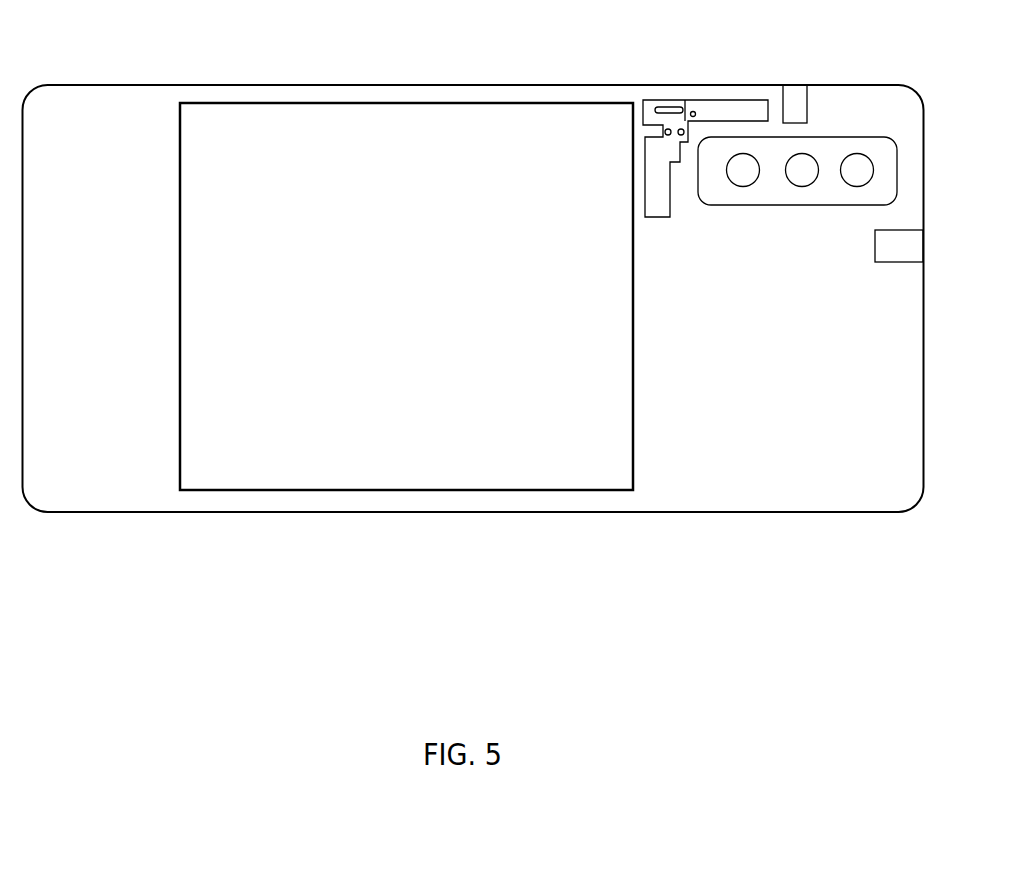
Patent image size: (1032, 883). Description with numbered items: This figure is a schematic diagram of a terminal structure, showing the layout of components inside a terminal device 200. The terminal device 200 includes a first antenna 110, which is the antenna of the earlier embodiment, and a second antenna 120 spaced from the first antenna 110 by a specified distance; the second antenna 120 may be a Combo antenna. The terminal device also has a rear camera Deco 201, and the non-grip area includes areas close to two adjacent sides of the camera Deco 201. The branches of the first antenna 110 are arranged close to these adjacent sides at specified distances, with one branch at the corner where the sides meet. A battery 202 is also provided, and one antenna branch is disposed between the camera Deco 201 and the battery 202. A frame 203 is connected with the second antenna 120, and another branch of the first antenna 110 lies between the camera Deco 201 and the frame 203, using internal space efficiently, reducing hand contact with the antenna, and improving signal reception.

The terminal device 200 is at (107, 45).
The frame 203 is at (473, 353).
The battery 202 is at (406, 362).
The first antenna 110 is at (676, 352).
The rear camera Deco 201 is at (778, 378).
The second antenna 120 is at (845, 425).